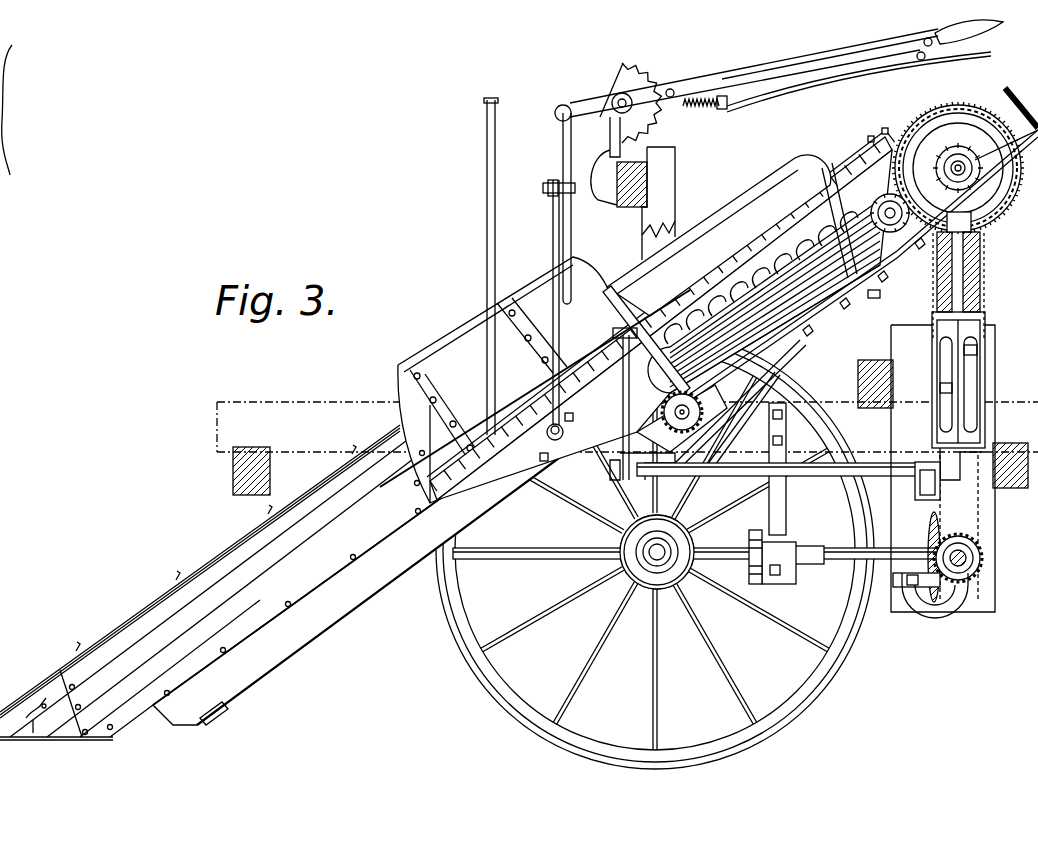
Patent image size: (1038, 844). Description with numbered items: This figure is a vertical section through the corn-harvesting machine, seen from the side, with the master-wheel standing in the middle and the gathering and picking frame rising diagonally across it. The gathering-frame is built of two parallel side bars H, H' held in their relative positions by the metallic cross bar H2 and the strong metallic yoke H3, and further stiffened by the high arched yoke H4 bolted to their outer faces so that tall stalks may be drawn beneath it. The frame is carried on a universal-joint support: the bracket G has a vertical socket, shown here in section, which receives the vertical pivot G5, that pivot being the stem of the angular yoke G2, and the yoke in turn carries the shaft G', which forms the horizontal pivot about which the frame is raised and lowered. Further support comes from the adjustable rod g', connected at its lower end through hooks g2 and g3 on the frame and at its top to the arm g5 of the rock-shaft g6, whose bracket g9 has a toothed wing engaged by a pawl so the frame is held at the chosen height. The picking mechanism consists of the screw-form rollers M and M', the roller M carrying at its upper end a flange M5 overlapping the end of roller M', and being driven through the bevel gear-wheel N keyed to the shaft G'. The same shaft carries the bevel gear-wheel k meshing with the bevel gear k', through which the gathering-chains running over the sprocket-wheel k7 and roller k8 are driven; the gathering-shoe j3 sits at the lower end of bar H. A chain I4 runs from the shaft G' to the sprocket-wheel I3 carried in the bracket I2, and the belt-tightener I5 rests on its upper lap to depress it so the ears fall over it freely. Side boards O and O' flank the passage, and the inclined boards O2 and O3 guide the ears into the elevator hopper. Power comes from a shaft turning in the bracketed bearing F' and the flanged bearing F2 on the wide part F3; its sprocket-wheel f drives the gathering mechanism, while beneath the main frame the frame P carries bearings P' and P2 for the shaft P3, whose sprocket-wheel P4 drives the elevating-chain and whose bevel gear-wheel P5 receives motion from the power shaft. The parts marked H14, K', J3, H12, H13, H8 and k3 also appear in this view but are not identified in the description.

The carrying wheel H14 is at (655, 550).
The lower conveyor frame K' is at (212, 582).
The bracket at conveyor foot J3 is at (32, 715).
The side bar of the gathering-frame H is at (565, 434).
The frame cross member (dotted) H12 is at (627, 427).
The frame section H13 is at (630, 427).
The side board O is at (540, 380).
The side board O' is at (719, 235).
The inclined board O2 is at (646, 334).
The inclined board O3 is at (839, 211).
The picking-roller M is at (661, 316).
The picking-roller M' is at (761, 278).
The flange M5 is at (664, 325).
The bevel gear k' is at (535, 388).
The bevel gear-wheel k is at (637, 395).
The hook g2 is at (779, 70).
The arm g5 is at (645, 109).
The rock-shaft g6 is at (643, 101).
The bracket g9 is at (632, 161).
The frame block H8 is at (640, 185).
The adjustable rod g' is at (559, 269).
The hook g3 is at (563, 440).
The yoke H4 is at (499, 266).
The bevel gear-wheel N is at (958, 168).
The shaft G' is at (974, 168).
The side bar of the gathering-frame H' is at (1005, 122).
The metallic cross bar H2 is at (1021, 108).
The sprocket-wheel k7 is at (872, 131).
The roller k8 is at (893, 117).
The belt-tightener I5 is at (889, 213).
The chain I4 is at (862, 266).
The metallic yoke H3 is at (880, 286).
The bracket I2 is at (682, 418).
The sprocket-wheel I3 is at (739, 437).
The flanged bearing F2 is at (788, 462).
The wide part F3 is at (955, 468).
The supporting frame or bracket G is at (971, 390).
The angular crotch or yoke G2 is at (975, 238).
The vertical pivot G5 is at (975, 262).
The gathering-shoe j3 is at (966, 286).
The clamp k3 is at (937, 481).
The frame P is at (696, 550).
The bearing P' is at (809, 537).
The shaft P3 is at (828, 548).
The sprocket-wheel P4 is at (742, 557).
The bearing P2 is at (905, 548).
The bracketed bearing F' is at (975, 558).
The sprocket-wheel f is at (968, 565).
The bevel gear-wheel P5 is at (940, 597).